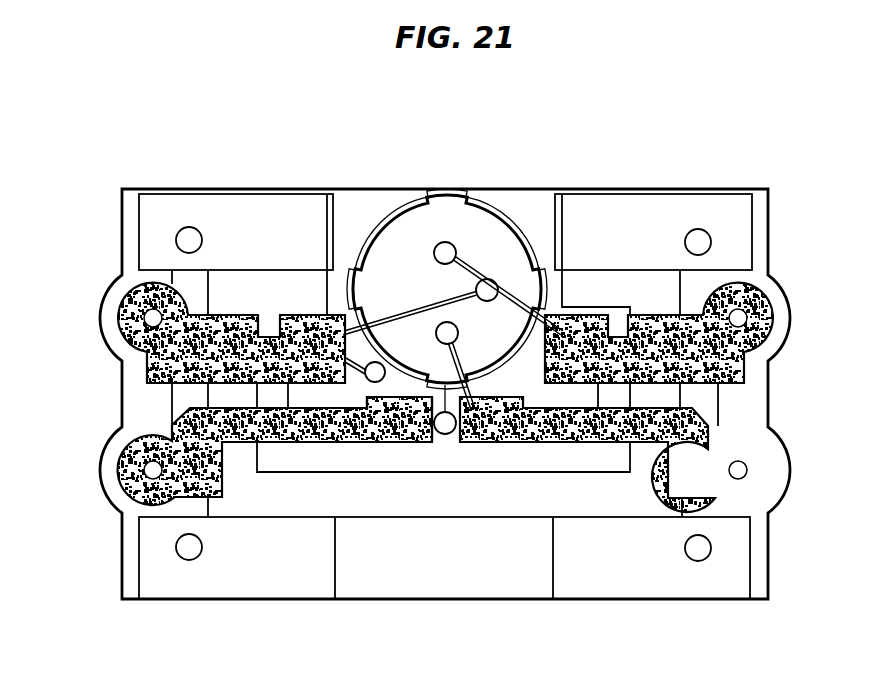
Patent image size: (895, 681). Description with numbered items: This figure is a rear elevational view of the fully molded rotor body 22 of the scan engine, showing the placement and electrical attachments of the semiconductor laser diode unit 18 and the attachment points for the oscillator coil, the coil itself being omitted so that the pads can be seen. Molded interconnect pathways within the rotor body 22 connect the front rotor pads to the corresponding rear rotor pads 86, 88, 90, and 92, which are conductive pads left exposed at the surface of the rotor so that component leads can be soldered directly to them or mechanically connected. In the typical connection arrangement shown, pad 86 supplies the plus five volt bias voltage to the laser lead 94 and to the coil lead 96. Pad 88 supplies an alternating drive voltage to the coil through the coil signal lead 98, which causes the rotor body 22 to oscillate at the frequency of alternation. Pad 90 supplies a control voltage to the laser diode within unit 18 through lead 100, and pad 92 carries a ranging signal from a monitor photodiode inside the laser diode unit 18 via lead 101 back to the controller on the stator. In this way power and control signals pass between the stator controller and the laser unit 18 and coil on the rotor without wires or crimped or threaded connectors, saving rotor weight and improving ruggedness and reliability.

The laser diode unit 18 is at (422, 228).
The rotor body 22 is at (605, 225).
The rear rotor pad 86 is at (147, 360).
The rear rotor pad 88 is at (173, 423).
The rear rotor pad 90 is at (742, 377).
The rear rotor pad 92 is at (720, 420).
The laser lead 94 is at (410, 308).
The coil lead 96 is at (354, 366).
The coil signal lead 98 is at (417, 442).
The lead 100 is at (449, 243).
The lead 101 is at (444, 434).